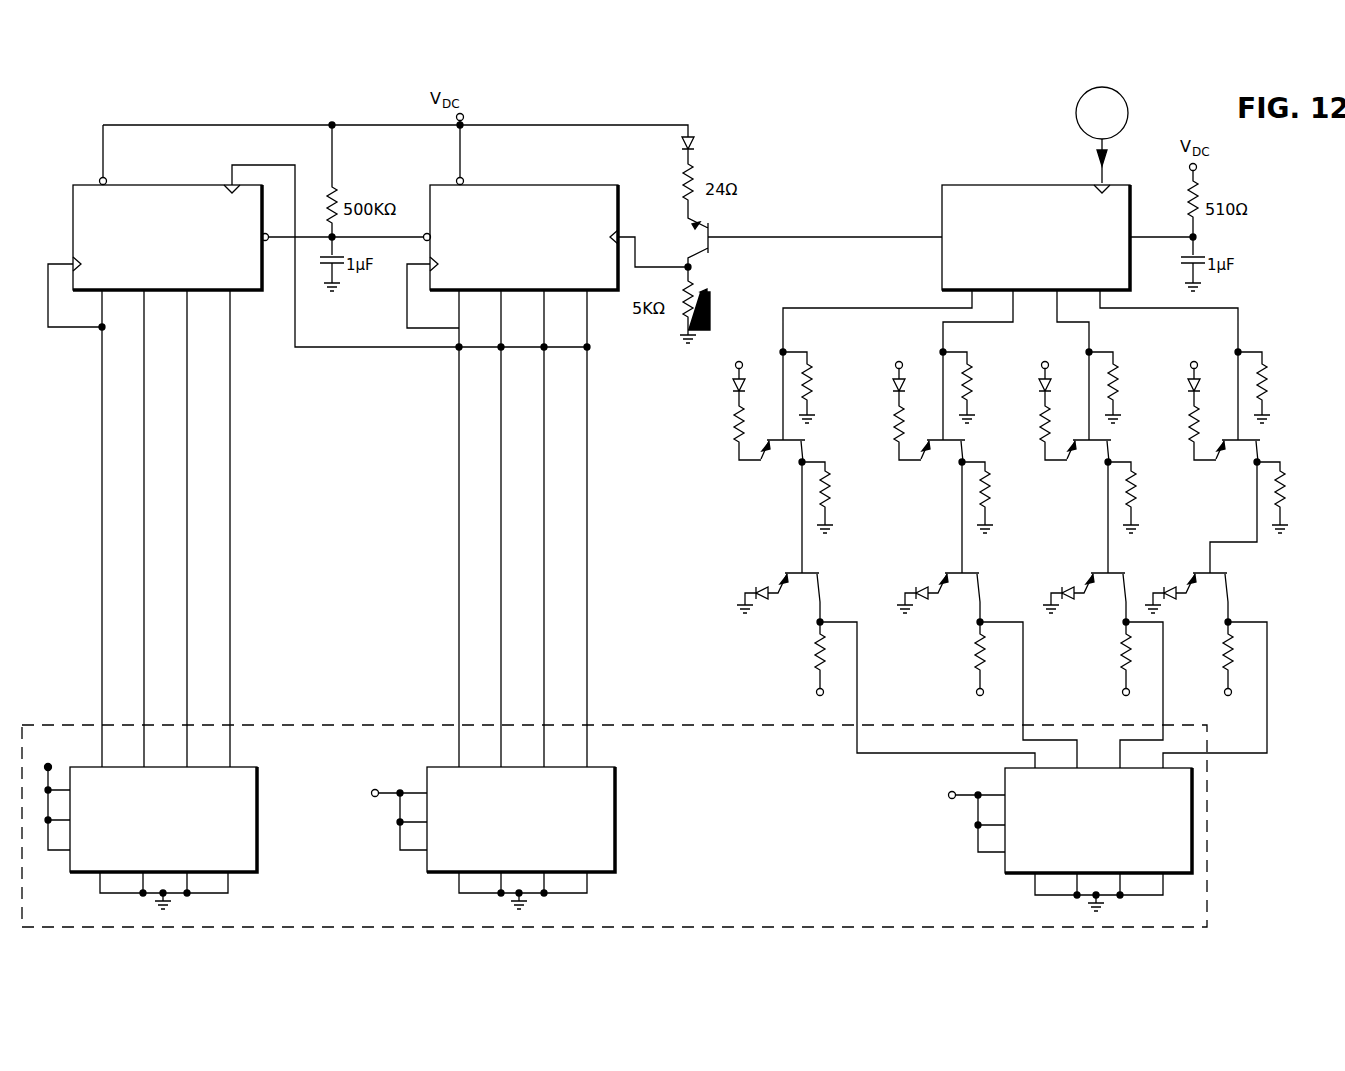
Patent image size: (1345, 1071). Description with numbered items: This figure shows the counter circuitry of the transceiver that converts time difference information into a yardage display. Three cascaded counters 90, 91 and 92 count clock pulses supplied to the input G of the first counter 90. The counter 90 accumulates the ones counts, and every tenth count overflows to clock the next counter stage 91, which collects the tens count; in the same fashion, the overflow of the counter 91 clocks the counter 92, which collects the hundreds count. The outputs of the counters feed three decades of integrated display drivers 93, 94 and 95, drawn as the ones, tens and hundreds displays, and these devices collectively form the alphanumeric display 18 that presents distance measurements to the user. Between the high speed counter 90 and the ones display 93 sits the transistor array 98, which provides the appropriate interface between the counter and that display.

The counter 92 is at (150, 184).
The counter 91 is at (568, 184).
The counter 90 is at (998, 184).
The transistor array 98 is at (758, 503).
The integrated display driver 95 is at (248, 872).
The integrated display driver 94 is at (605, 872).
The integrated display driver 93 is at (1172, 873).
The alphanumeric display 18 is at (1207, 887).